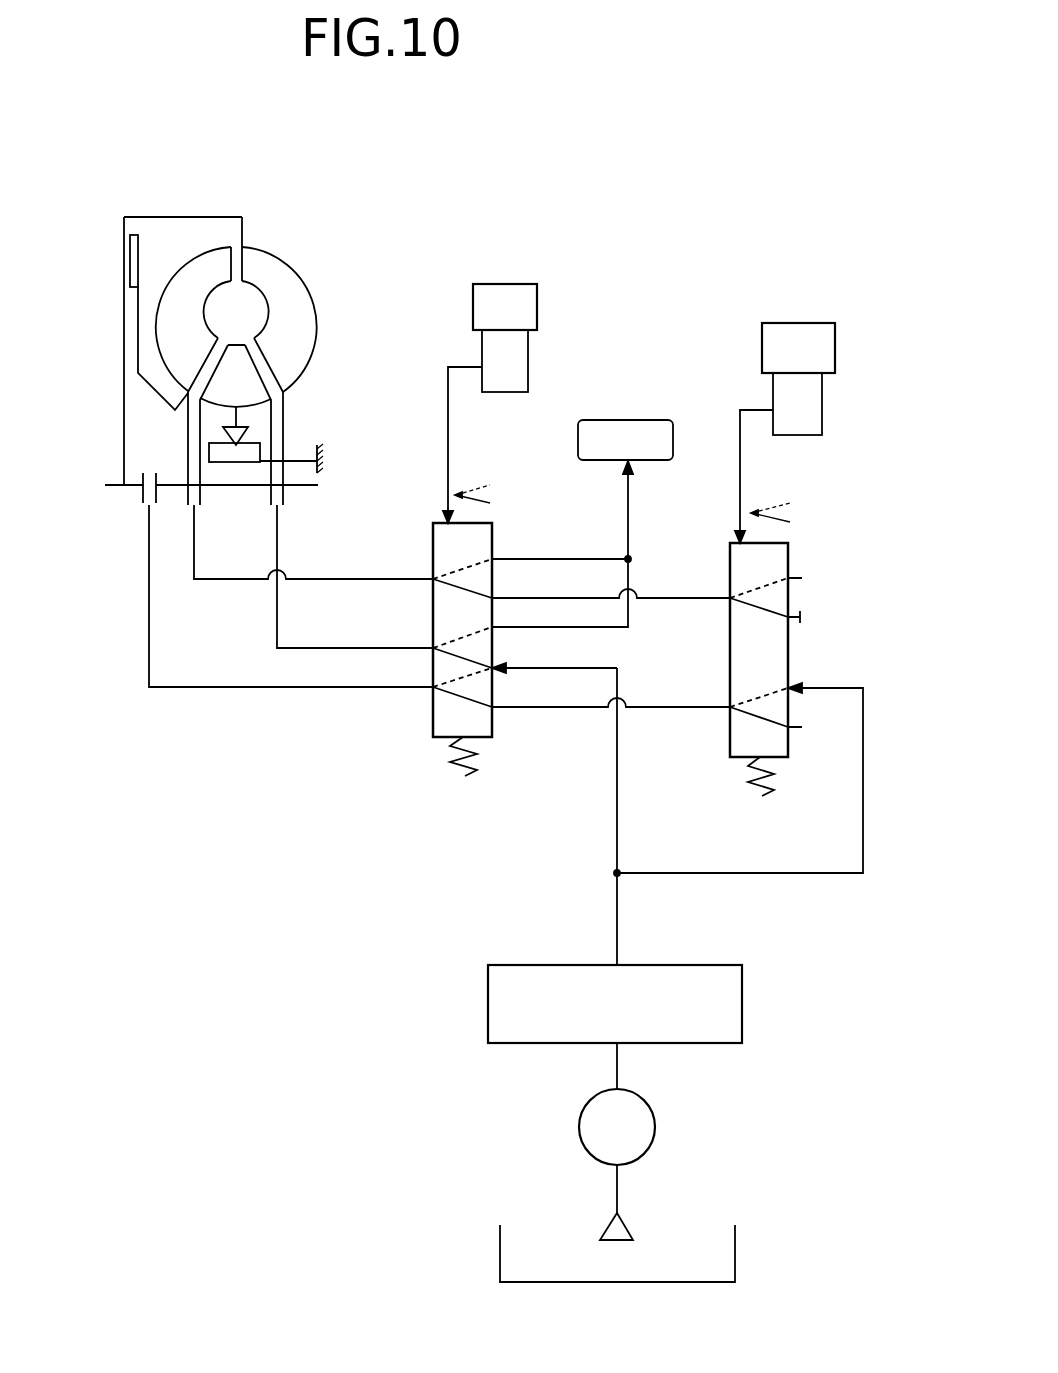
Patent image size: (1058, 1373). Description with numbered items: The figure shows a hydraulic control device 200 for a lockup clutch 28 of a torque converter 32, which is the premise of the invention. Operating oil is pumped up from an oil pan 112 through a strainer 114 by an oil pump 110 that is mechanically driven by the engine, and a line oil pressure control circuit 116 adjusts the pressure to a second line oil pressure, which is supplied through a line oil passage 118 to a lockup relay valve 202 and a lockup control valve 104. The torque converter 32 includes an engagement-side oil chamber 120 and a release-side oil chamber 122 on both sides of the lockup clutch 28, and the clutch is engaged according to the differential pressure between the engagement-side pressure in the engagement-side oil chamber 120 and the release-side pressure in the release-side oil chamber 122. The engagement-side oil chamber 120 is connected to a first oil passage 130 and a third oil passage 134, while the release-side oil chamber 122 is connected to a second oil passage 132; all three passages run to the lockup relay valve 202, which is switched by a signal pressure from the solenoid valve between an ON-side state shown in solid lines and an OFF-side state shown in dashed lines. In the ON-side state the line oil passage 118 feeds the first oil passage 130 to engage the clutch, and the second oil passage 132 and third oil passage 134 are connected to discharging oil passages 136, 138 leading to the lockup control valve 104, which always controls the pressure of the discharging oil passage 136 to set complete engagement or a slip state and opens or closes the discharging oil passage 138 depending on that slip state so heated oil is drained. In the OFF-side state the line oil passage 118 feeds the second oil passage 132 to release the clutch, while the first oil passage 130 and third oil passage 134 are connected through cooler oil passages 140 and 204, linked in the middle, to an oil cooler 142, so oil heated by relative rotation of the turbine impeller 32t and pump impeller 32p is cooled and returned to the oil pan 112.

The hydraulic control device 200 is at (699, 148).
The lockup clutch 28 is at (105, 268).
The torque converter 32 is at (289, 237).
The turbine impeller 32t is at (177, 337).
The pump impeller 32p is at (297, 320).
The engagement-side oil chamber 120 is at (171, 233).
The release-side oil chamber 122 is at (138, 418).
The first oil passage 130 is at (278, 543).
The second oil passage 132 is at (147, 612).
The third oil passage 134 is at (218, 582).
The lockup relay valve 202 is at (418, 723).
The cooler oil passage 204 is at (572, 557).
The oil cooler 142 is at (615, 425).
The cooler oil passage 140 is at (557, 627).
The discharging oil passage 138 is at (668, 600).
The discharging oil passage 136 is at (668, 710).
The lockup control valve 104 is at (814, 768).
The line oil passage 118 is at (617, 898).
The line oil pressure control circuit 116 is at (580, 970).
The oil pump 110 is at (645, 1118).
The strainer 114 is at (618, 1227).
The oil pan 112 is at (498, 1247).